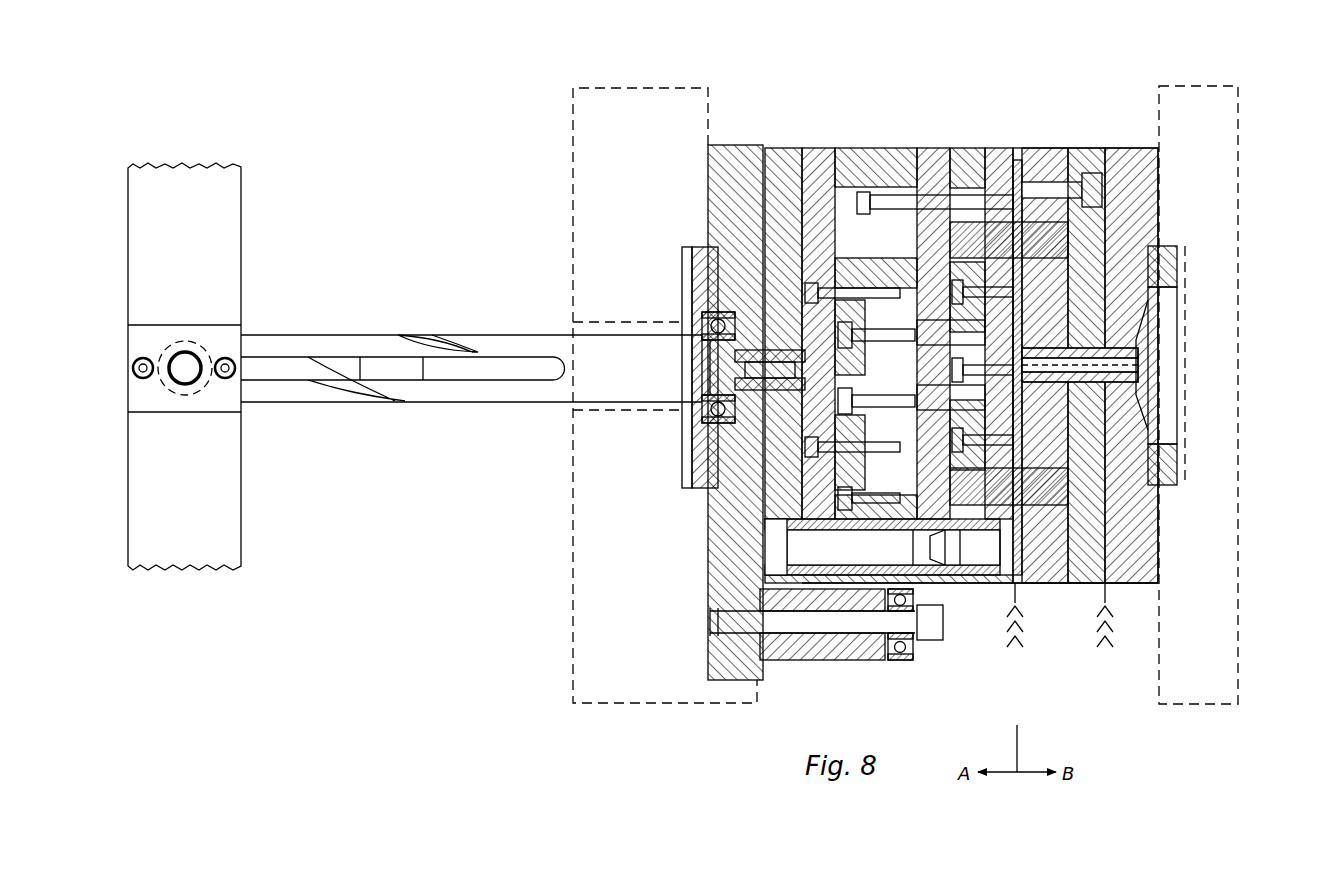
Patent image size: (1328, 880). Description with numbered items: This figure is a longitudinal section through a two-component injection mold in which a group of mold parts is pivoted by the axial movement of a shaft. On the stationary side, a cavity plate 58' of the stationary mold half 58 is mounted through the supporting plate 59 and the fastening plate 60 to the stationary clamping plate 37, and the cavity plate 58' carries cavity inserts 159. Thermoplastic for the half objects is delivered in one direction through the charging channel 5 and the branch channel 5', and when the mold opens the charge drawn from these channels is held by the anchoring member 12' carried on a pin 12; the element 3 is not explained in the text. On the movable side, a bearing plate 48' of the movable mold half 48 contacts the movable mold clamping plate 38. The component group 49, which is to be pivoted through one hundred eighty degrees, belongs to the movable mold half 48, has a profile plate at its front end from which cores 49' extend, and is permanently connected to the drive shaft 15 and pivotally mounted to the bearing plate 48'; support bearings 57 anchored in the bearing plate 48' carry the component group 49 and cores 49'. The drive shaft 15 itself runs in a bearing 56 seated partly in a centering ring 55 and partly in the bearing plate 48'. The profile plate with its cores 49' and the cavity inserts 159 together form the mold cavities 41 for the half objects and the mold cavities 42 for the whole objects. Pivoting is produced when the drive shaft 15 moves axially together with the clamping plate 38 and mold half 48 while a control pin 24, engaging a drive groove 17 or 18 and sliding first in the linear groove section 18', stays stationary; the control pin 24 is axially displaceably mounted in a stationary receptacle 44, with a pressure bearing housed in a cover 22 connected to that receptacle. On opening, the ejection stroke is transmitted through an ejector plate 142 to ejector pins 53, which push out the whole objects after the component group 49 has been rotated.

The clamping ring 3 is at (1160, 470).
The charging channel 5 is at (1142, 348).
The branch channel 5' is at (1138, 390).
The pin 12 is at (1159, 296).
The anchoring member 12' is at (1174, 365).
The drive shaft 15 is at (530, 392).
The drive groove 17 is at (358, 392).
The drive groove 18 is at (438, 314).
The linear groove section 18' is at (403, 328).
The cover 22 is at (172, 330).
The control pin 24 is at (196, 358).
The stationary clamping plate 37 is at (1200, 120).
The movable mold clamping plate 38 is at (595, 175).
The mold cavities for the half objects 41 is at (1060, 508).
The mold cavities for the whole objects 42 is at (1075, 235).
The stationary receptacle 44 is at (210, 243).
The movable mold half 48 is at (961, 320).
The bearing plate 48' is at (735, 376).
The component group 49 is at (906, 291).
The cores 49' is at (969, 399).
The ejector pins 53 is at (882, 500).
The centering ring 55 is at (690, 452).
The bearing 56 is at (697, 325).
The support bearings 57 is at (908, 662).
The stationary mold half 58 is at (1085, 308).
The cavity plate 58' is at (1062, 327).
The supporting plate 59 is at (1090, 150).
The fastening plate 60 is at (1125, 150).
The ejector plate 142 is at (872, 500).
The cavity inserts 159 is at (1055, 488).